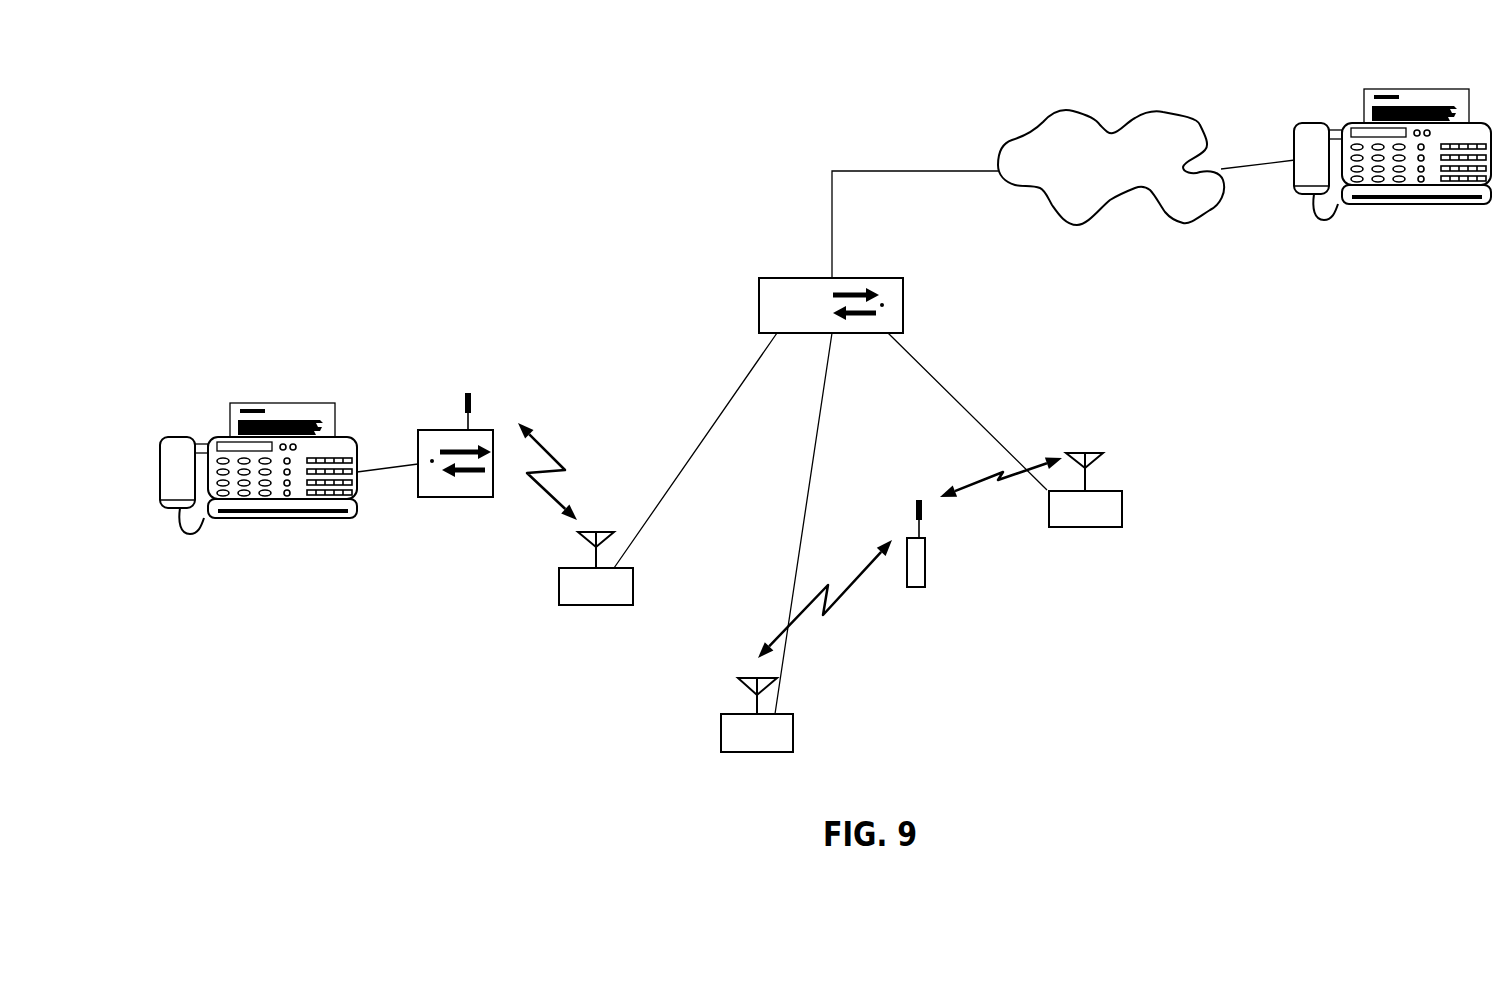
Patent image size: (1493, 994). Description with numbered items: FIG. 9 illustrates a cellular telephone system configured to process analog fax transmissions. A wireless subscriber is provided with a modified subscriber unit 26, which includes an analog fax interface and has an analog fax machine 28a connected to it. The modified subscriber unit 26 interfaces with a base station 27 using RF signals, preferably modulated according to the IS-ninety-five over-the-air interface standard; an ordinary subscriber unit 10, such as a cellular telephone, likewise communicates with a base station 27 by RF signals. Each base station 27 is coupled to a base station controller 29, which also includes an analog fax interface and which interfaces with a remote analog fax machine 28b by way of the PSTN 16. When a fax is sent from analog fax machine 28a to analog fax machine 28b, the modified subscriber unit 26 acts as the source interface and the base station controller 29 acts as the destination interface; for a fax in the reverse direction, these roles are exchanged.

The subscriber unit 10 is at (925, 575).
The PSTN 16 is at (1165, 213).
The modified subscriber unit 26 is at (480, 497).
The base station 27 is at (559, 595).
The analog fax machine 28a is at (330, 518).
The analog fax machine 28b is at (1364, 208).
The base station controller 29 is at (759, 312).